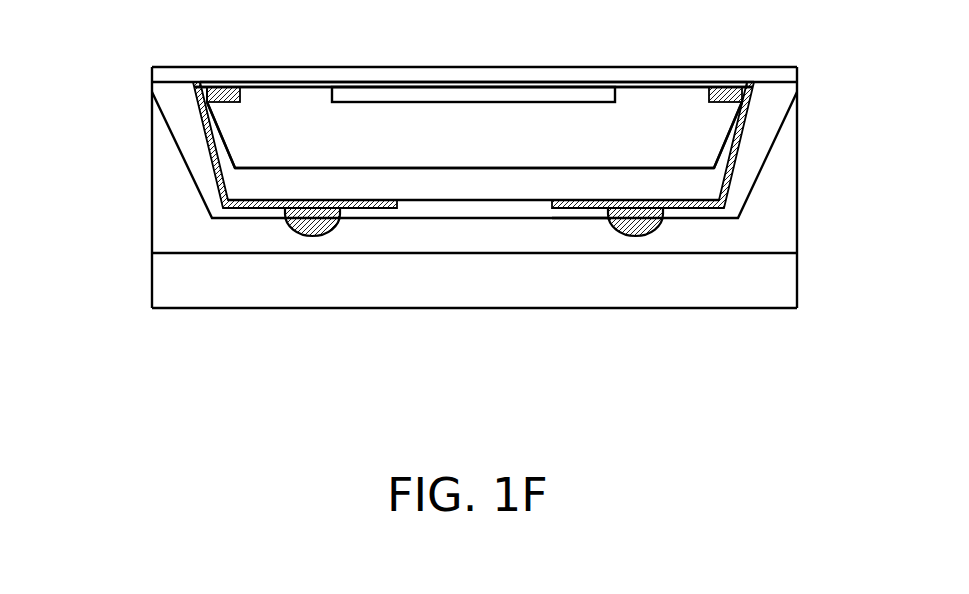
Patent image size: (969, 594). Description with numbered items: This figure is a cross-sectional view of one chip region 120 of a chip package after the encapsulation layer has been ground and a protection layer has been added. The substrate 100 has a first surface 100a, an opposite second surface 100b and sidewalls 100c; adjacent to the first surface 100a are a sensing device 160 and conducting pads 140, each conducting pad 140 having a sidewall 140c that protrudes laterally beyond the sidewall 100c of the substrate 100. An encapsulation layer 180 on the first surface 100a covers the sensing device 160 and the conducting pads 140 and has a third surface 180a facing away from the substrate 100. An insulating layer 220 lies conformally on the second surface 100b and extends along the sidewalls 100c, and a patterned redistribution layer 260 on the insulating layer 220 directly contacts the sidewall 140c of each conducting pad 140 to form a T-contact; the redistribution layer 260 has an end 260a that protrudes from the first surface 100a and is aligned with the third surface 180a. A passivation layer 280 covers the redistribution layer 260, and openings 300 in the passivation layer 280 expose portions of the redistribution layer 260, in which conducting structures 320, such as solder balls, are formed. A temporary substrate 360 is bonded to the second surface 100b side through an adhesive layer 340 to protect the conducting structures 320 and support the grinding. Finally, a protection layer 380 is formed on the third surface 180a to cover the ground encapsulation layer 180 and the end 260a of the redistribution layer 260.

The substrate 100 is at (500, 148).
The first surface 100a is at (302, 80).
The second surface 100b is at (255, 178).
The sidewall of the substrate 100c is at (214, 137).
The chip region 120 is at (797, 435).
The conducting pad 140 is at (220, 86).
The sidewall of the conducting pad 140c is at (189, 97).
The sensing device 160 is at (383, 95).
The encapsulation layer 180 is at (627, 85).
The third surface 180a is at (700, 80).
The insulating layer 220 is at (708, 185).
The redistribution layer 260 is at (735, 140).
The end of the redistribution layer 260a is at (754, 81).
The passivation layer 280 is at (583, 213).
The opening 300 is at (647, 235).
The conducting structure 320 is at (313, 237).
The adhesive layer 340 is at (782, 232).
The temporary substrate 360 is at (782, 283).
The protection layer 380 is at (782, 76).